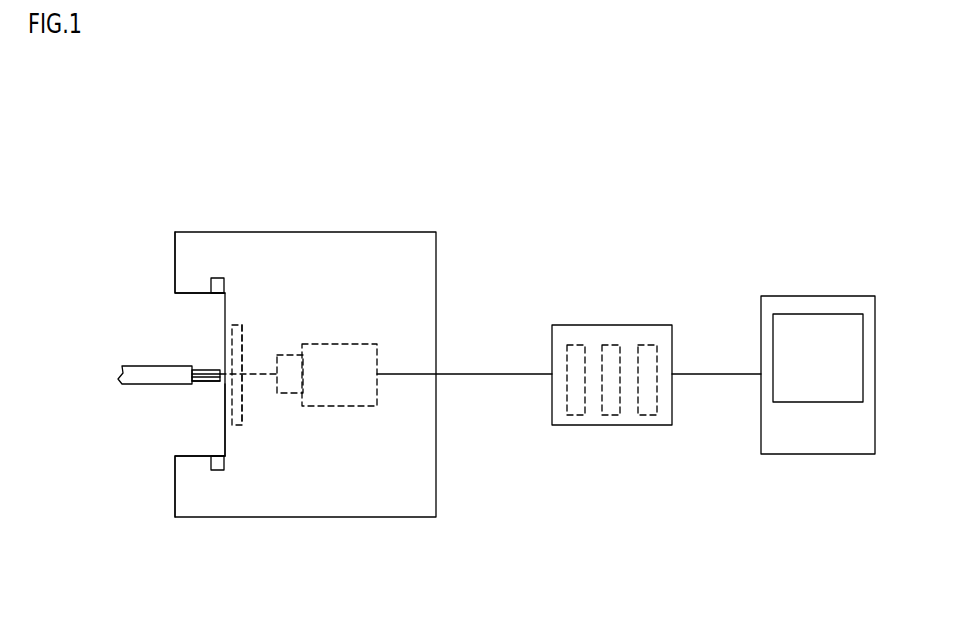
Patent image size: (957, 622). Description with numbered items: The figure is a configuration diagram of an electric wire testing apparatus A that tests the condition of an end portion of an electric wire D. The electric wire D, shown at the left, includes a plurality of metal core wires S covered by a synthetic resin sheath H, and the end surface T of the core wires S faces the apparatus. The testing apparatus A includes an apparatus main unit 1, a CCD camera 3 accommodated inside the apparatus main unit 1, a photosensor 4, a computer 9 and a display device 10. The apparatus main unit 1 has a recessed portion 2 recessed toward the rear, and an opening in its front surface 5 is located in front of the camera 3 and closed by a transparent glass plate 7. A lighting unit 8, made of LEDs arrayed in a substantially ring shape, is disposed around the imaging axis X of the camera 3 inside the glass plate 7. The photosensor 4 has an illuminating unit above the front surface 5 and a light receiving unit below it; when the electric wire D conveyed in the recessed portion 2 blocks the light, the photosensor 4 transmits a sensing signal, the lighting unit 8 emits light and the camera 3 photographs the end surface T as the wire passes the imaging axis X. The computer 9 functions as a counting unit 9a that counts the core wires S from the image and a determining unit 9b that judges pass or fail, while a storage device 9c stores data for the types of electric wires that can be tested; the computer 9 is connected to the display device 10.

The testing apparatus A is at (436, 206).
The apparatus main unit 1 is at (383, 232).
The recessed portion 2 is at (188, 294).
The CCD camera 3 is at (352, 407).
The photosensor 4 is at (217, 278).
The front surface 5 is at (226, 430).
The transparent glass plate 7 is at (232, 425).
The lighting unit 8 is at (242, 425).
The computer 9 is at (648, 325).
The counting unit 9a is at (570, 417).
The determining unit 9b is at (607, 417).
The storage device 9c is at (650, 417).
The display device 10 is at (842, 296).
The sheath H is at (135, 365).
The end surface T is at (225, 373).
The core wires S is at (198, 384).
The electric wire D is at (126, 388).
The imaging axis X is at (268, 372).